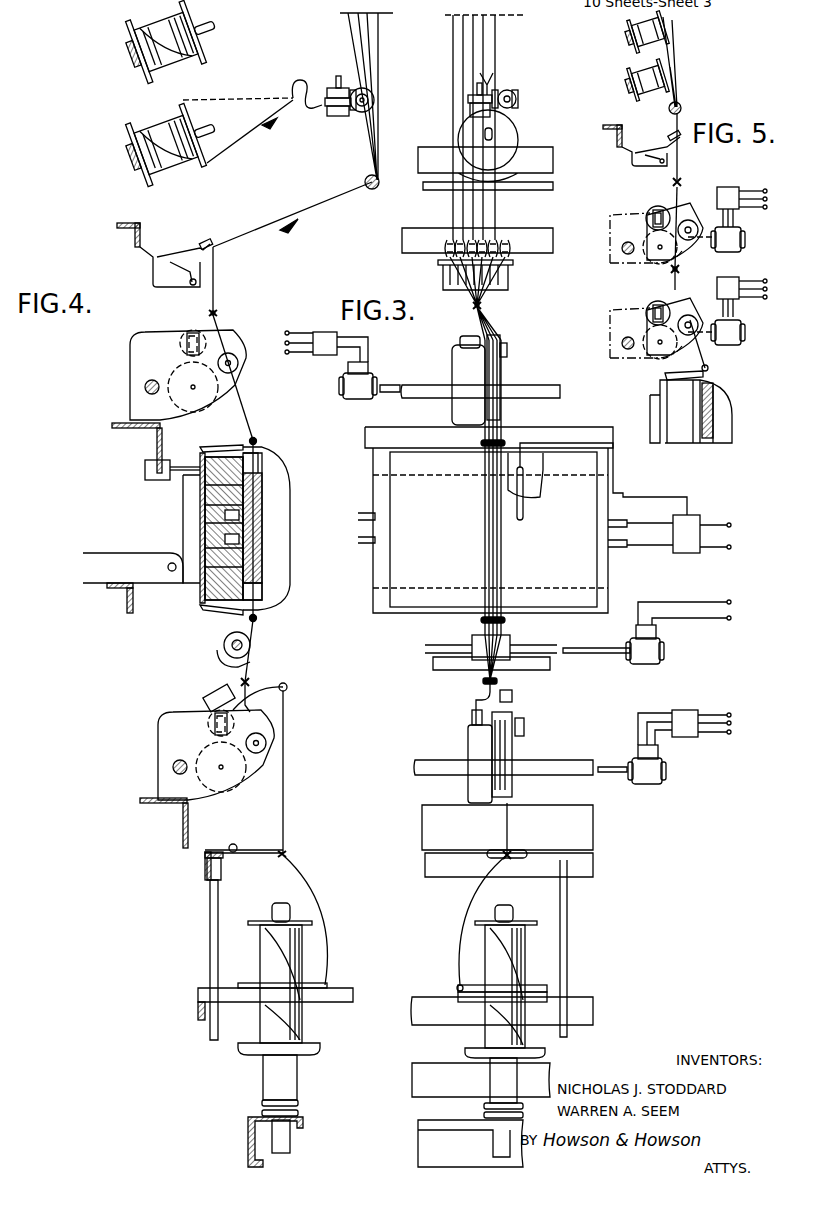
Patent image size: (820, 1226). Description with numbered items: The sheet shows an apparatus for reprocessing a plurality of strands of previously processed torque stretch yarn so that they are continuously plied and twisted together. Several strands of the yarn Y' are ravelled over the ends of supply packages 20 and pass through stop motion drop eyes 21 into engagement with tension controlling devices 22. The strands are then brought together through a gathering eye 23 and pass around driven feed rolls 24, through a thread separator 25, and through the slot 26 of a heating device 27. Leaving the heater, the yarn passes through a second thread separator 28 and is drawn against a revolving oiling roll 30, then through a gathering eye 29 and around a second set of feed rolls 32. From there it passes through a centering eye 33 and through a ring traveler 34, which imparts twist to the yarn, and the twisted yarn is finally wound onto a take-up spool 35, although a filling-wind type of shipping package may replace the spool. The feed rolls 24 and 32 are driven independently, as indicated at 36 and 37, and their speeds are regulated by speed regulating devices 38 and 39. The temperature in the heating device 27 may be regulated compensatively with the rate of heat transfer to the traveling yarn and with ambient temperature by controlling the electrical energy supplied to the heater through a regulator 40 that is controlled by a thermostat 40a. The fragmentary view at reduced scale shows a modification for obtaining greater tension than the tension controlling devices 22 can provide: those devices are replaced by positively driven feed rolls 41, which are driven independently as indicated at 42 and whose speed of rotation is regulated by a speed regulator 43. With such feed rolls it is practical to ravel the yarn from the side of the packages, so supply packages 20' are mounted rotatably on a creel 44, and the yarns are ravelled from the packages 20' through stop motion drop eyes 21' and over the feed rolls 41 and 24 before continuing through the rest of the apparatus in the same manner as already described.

In FIG. 4, the supply package 20 is at (172, 102).
In FIG. 3, the supply package 20 is at (491, 127).
In FIG. 5, the supply package 20' is at (693, 65).
In FIG. 4, the stop motion drop eye 21 is at (165, 255).
In FIG. 3, the stop motion drop eye 21 is at (482, 259).
In FIG. 5, the stop motion drop eye 21' is at (642, 146).
In FIG. 4, the tension controlling device 22 is at (345, 80).
In FIG. 3, the tension controlling device 22 is at (512, 97).
In FIG. 4, the gathering eye 23 is at (216, 313).
In FIG. 3, the gathering eye 23 is at (482, 307).
In FIG. 5, the gathering eye 23 is at (679, 269).
In FIG. 4, the driven feed roll 24 is at (137, 363).
In FIG. 3, the driven feed roll 24 is at (457, 363).
In FIG. 5, the driven feed roll 24 is at (622, 312).
In FIG. 4, the thread separator 25 is at (257, 440).
In FIG. 3, the thread separator 25 is at (503, 443).
In FIG. 3, the slot 26 is at (497, 565).
In FIG. 4, the heating device 27 is at (253, 563).
In FIG. 3, the heating device 27 is at (445, 531).
In FIG. 5, the heating device 27 is at (722, 401).
In FIG. 4, the second thread separator 28 is at (257, 620).
In FIG. 3, the second thread separator 28 is at (483, 620).
In FIG. 4, the gathering eye 29 is at (240, 680).
In FIG. 3, the gathering eye 29 is at (485, 682).
In FIG. 4, the revolving oiling roll 30 is at (227, 636).
In FIG. 3, the revolving oiling roll 30 is at (510, 640).
In FIG. 4, the feed roll 32 is at (160, 733).
In FIG. 3, the feed roll 32 is at (468, 738).
In FIG. 4, the centering eye 33 is at (286, 853).
In FIG. 3, the centering eye 33 is at (510, 853).
In FIG. 4, the ring traveler 34 is at (327, 985).
In FIG. 3, the ring traveler 34 is at (460, 987).
In FIG. 4, the take-up spool 35 is at (303, 1027).
In FIG. 3, the take-up spool 35 is at (487, 932).
In FIG. 3, the drive 36 is at (353, 385).
In FIG. 5, the drive 36 is at (745, 333).
In FIG. 3, the drive 37 is at (645, 784).
In FIG. 3, the speed regulating device 38 is at (323, 332).
In FIG. 5, the speed regulating device 38 is at (726, 287).
In FIG. 3, the speed regulating device 39 is at (685, 712).
In FIG. 3, the regulator 40 is at (687, 520).
In FIG. 4, the thermostat 40a is at (267, 492).
In FIG. 3, the thermostat 40a is at (525, 512).
In FIG. 5, the positively driven feed roll 41 is at (622, 212).
In FIG. 5, the drive 42 is at (745, 237).
In FIG. 5, the speed regulator 43 is at (723, 190).
In FIG. 5, the creel 44 is at (627, 32).
In FIG. 4, the yarn Y' is at (277, 196).